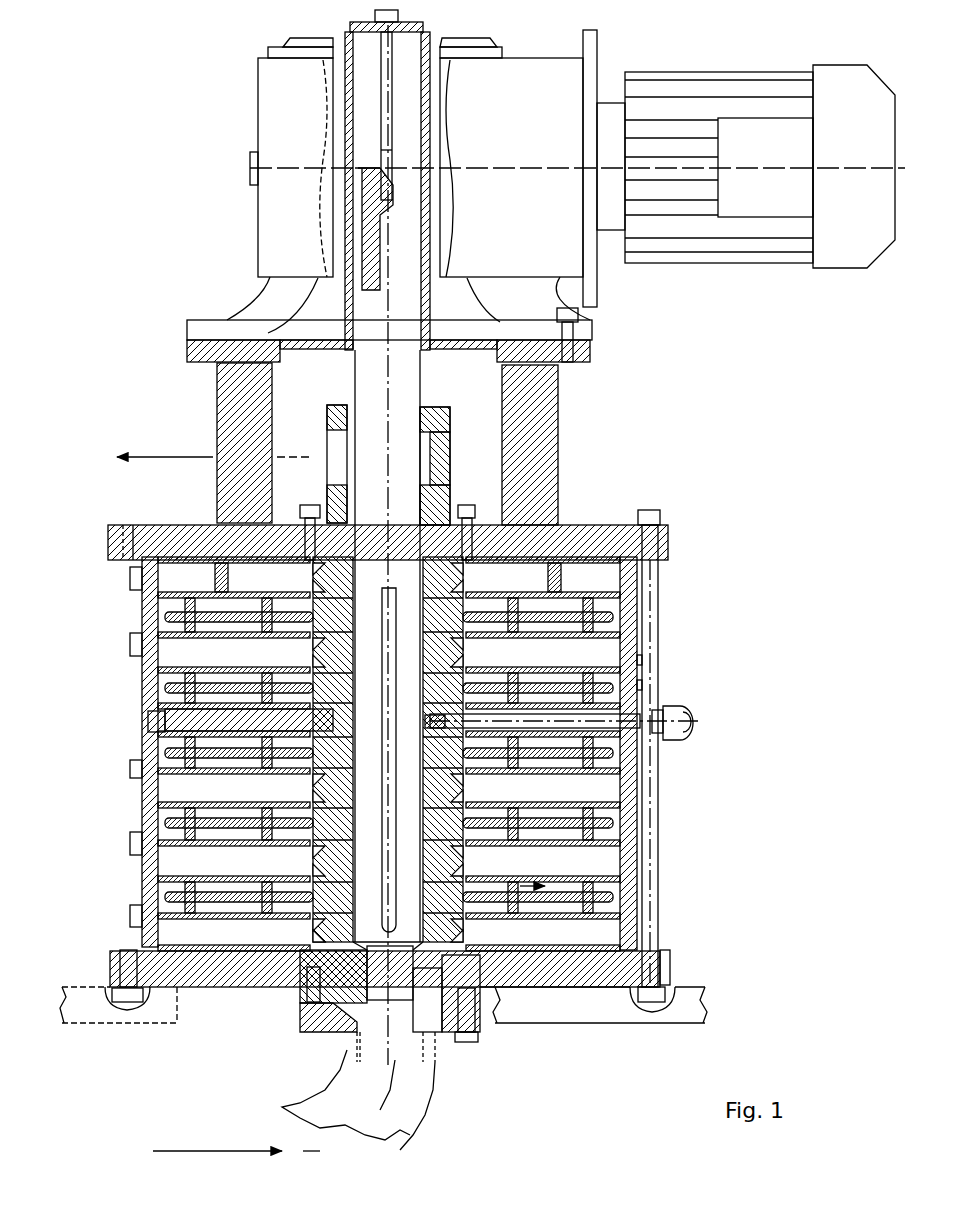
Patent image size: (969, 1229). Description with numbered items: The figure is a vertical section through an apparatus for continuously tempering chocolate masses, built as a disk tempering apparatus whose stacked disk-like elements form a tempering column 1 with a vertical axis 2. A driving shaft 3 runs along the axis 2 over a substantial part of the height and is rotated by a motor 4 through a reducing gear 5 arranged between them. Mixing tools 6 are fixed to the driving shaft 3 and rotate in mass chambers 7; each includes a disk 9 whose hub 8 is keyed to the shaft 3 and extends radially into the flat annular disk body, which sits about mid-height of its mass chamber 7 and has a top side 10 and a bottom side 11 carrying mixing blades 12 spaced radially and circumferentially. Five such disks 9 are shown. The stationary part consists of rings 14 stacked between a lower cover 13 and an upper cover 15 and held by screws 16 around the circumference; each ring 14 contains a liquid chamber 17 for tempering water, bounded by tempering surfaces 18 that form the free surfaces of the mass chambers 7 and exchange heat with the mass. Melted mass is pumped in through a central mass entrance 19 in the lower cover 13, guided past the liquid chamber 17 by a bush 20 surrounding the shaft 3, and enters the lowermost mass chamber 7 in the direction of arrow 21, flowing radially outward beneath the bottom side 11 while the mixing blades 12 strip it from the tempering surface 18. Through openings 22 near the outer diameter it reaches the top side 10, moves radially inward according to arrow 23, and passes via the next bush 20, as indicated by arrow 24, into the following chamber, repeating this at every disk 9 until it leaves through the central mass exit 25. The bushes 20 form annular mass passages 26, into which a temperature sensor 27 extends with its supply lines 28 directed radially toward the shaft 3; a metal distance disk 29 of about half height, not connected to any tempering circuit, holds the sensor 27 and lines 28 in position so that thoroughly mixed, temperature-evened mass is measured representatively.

The tempering column 1 is at (719, 648).
The vertical axis 2 is at (392, 390).
The driving shaft 3 is at (422, 398).
The motor 4 is at (757, 200).
The reducing gear 5 is at (540, 232).
The mixing tool 6 is at (603, 615).
The mass chamber 7 is at (168, 680).
The hub 8 is at (451, 445).
The disk 9 is at (397, 534).
The top side 10 is at (441, 748).
The bottom side 11 is at (469, 755).
The mixing blades 12 is at (483, 760).
The lower cover 13 is at (593, 972).
The rings 14 is at (644, 835).
The upper cover 15 is at (667, 528).
The screws 16 is at (667, 683).
The liquid chamber 17 is at (618, 898).
The tempering surfaces 18 is at (136, 824).
The mass entrance 19 is at (440, 1047).
The bush 20 is at (450, 955).
The arrow 21 is at (428, 1010).
The openings 22 is at (605, 907).
The arrow 23 is at (552, 908).
The arrow 24 is at (323, 943).
The mass exit 25 is at (343, 457).
The mass passage 26 is at (150, 735).
The temperature sensor 27 is at (430, 718).
The supply lines 28 is at (625, 737).
The distance disk 29 is at (150, 707).